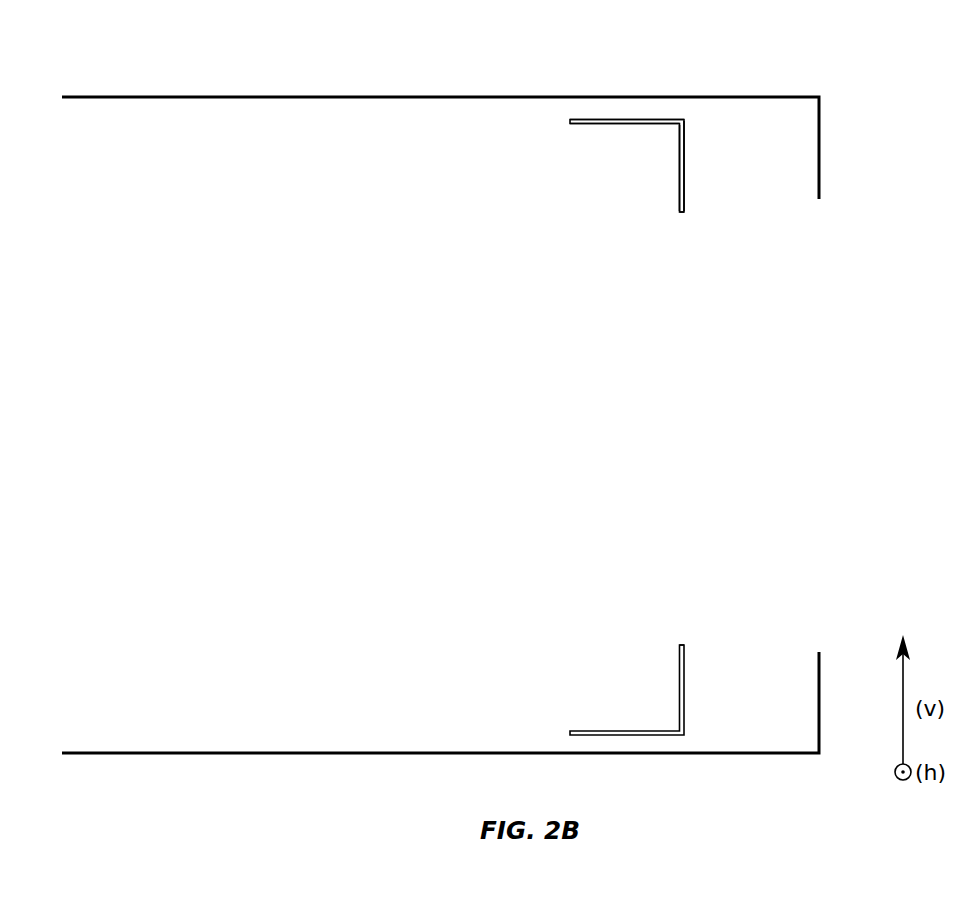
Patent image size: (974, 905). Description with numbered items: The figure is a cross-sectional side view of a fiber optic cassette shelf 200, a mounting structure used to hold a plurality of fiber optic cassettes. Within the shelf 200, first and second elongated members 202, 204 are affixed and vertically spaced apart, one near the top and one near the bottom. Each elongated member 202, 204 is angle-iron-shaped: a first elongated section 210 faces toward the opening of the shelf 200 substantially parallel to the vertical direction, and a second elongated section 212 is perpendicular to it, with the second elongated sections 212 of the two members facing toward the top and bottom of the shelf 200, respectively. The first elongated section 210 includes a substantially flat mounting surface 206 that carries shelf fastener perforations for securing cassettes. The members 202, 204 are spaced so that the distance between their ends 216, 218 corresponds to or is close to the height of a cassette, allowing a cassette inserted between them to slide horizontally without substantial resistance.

The fiber optic cassette shelf 200 is at (710, 60).
The first elongated member 202 is at (679, 200).
The second elongated member 204 is at (679, 655).
The mounting surface 206 is at (686, 149).
The first elongated section 210 is at (679, 157).
The second elongated section 212 is at (612, 122).
The end of first elongated member 216 is at (684, 216).
The end of second elongated member 218 is at (683, 640).